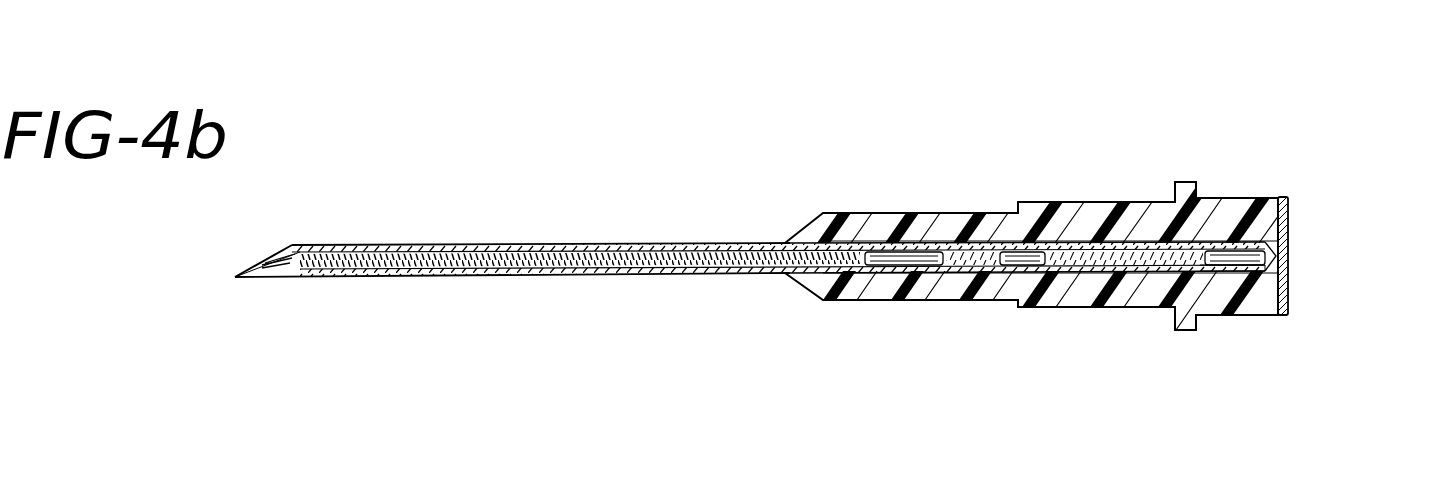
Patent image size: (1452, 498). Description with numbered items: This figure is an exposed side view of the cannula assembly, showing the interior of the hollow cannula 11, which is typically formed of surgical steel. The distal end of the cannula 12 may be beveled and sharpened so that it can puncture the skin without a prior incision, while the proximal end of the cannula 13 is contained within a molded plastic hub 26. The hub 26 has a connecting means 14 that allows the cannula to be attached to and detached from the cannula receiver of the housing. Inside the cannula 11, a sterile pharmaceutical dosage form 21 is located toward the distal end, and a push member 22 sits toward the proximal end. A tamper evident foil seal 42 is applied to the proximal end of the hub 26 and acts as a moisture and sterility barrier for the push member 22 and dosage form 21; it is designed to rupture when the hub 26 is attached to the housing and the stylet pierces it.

The cannula 11 is at (502, 245).
The distal end of the cannula 12 is at (247, 279).
The pharmaceutical dosage form 21 is at (378, 275).
The hub 26 is at (887, 212).
The connecting means 14 is at (1210, 202).
The tamper evident foil seal 42 is at (1290, 248).
The push member 22 is at (1110, 260).
The proximal end of the cannula 13 is at (1232, 270).